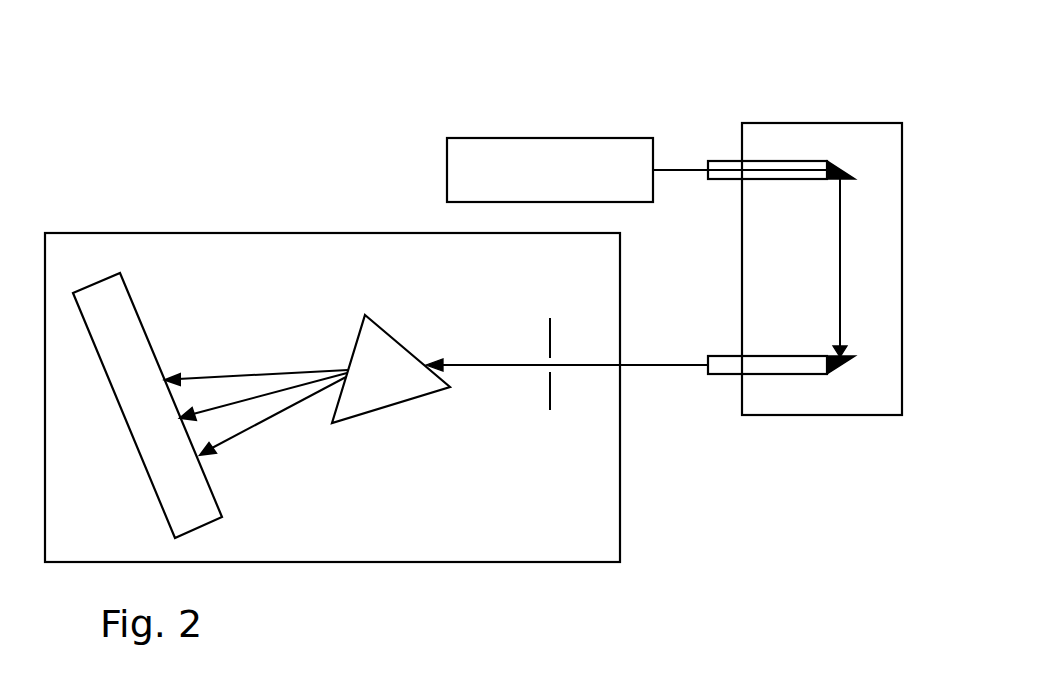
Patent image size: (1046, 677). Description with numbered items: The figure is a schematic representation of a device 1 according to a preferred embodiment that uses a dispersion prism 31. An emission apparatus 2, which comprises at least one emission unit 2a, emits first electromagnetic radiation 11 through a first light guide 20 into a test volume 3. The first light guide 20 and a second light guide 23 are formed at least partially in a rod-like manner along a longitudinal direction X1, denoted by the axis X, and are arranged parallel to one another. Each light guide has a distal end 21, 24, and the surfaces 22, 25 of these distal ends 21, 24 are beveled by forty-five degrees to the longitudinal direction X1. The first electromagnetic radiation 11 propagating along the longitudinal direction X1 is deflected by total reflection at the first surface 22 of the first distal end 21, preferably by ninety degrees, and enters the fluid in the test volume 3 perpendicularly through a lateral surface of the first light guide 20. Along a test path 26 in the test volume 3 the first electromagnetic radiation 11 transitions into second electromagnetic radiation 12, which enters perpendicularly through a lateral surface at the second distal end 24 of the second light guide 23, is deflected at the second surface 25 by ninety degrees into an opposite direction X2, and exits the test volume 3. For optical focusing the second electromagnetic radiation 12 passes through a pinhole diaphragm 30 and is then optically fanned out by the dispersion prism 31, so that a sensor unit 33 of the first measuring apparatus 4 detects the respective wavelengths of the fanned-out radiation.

The device 1 is at (291, 86).
The emission apparatus 2 is at (550, 145).
The emission unit 2a is at (500, 150).
The first electromagnetic radiation 11 is at (691, 165).
The test volume 3 is at (880, 271).
The first light guide 20 is at (758, 165).
The optical axis X is at (794, 277).
The longitudinal direction X1 is at (797, 168).
The opposite direction X2 is at (787, 378).
The first distal end 21 is at (857, 134).
The first surface 22 is at (847, 168).
The test path 26 is at (841, 306).
The second light guide 23 is at (755, 378).
The second distal end 24 is at (862, 413).
The second surface 25 is at (842, 375).
The second electromagnetic radiation 12 is at (673, 367).
The first measuring apparatus 4 is at (255, 547).
The pinhole diaphragm 30 is at (550, 398).
The dispersion prism 31 is at (357, 403).
The sensor unit 33 is at (103, 293).